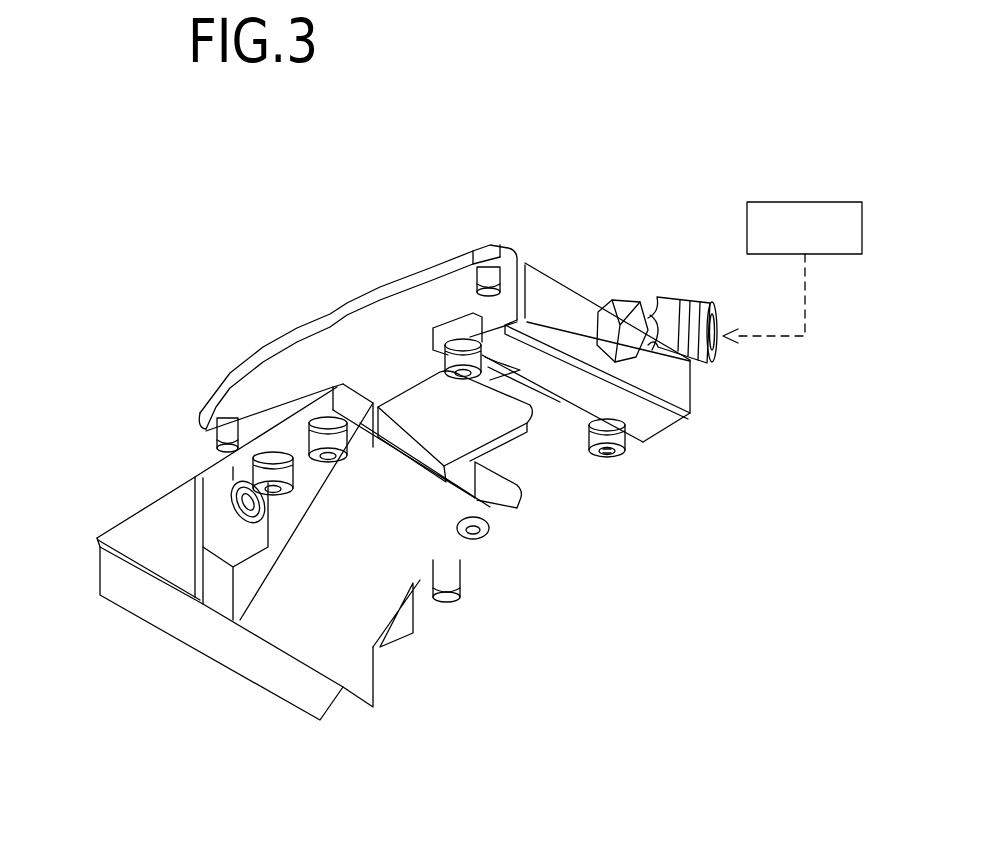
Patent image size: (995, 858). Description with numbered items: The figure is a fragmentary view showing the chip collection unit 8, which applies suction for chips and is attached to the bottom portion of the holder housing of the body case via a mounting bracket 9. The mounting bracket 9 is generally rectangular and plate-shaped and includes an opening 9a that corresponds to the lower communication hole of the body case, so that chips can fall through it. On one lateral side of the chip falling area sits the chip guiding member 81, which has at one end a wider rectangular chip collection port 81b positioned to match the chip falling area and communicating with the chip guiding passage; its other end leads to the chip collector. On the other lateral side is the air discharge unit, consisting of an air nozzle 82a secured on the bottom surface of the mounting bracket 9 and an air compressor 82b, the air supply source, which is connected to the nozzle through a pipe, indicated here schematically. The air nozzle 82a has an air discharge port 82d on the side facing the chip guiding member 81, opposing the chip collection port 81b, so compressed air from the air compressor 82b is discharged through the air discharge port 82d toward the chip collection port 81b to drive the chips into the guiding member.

The chip collection unit 8 is at (653, 527).
The mounting bracket 9 is at (493, 243).
The opening 9a is at (410, 400).
The chip guiding member 81 is at (110, 558).
The chip collection port 81b is at (400, 448).
The air nozzle 82a is at (675, 430).
The air compressor 82b is at (843, 200).
The air discharge port 82d is at (552, 423).